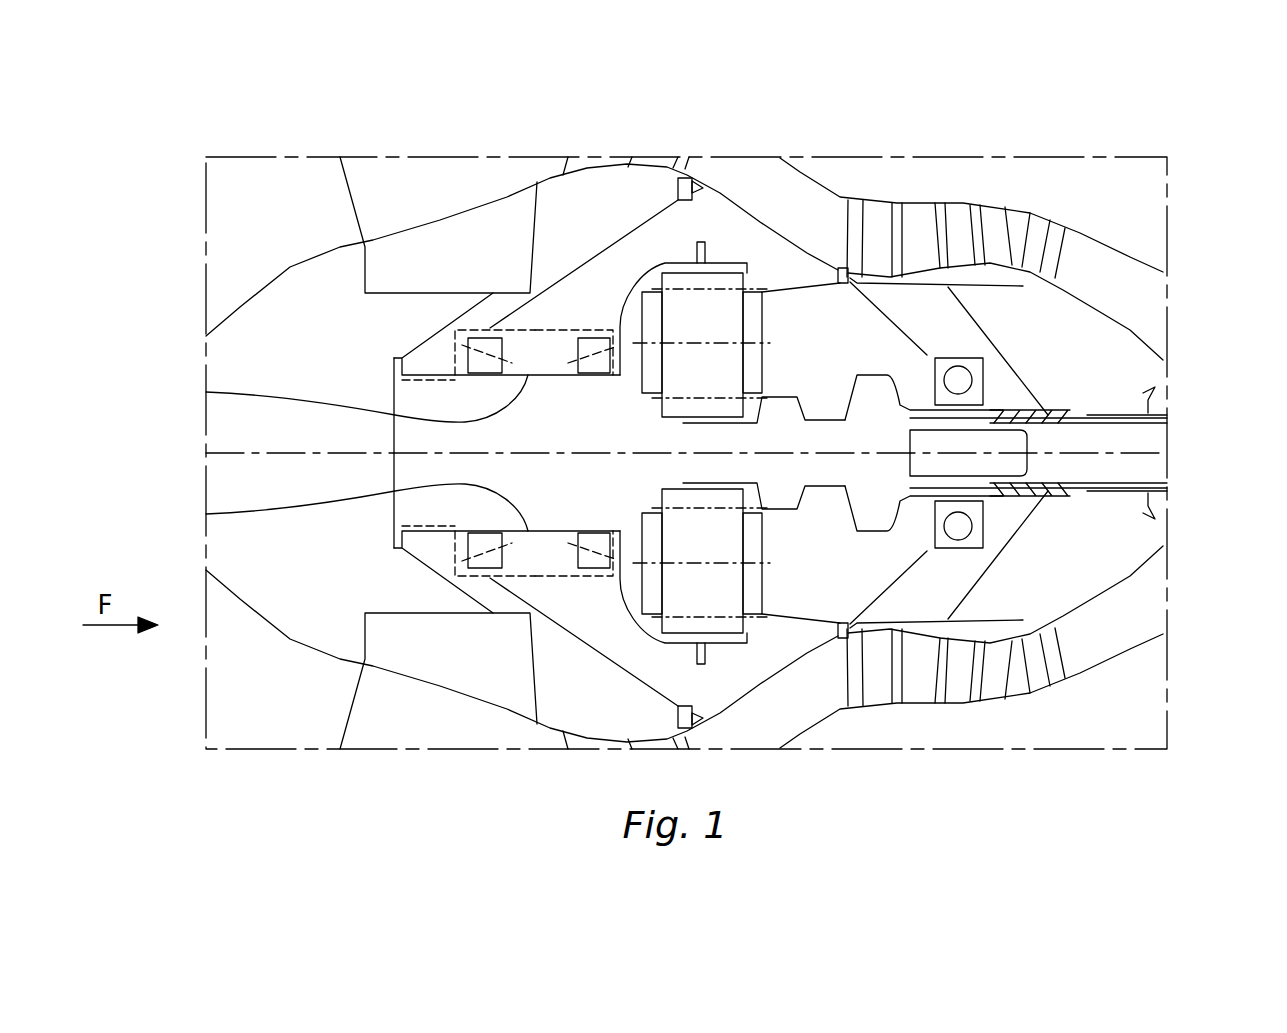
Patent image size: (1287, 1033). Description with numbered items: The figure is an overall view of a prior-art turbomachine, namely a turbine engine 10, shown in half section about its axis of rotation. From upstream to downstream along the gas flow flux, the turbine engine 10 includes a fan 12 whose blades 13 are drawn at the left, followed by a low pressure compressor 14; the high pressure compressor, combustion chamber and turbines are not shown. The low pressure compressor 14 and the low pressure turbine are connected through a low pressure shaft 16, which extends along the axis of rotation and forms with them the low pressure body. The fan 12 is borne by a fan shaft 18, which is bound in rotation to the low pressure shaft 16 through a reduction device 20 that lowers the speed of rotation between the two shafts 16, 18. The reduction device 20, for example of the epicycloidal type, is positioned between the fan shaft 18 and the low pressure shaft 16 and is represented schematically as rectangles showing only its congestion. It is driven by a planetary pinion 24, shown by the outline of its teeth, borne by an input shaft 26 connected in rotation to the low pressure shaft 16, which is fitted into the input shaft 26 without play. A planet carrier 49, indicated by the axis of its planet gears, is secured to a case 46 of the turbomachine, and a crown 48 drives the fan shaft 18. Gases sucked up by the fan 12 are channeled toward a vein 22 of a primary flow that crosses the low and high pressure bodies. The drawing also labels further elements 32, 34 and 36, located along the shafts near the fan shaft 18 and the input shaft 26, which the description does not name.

The turbine engine 10 is at (267, 122).
The fan 12 is at (388, 185).
The blades 13 is at (430, 178).
The low pressure compressor 14 is at (955, 220).
The low pressure shaft 16 is at (1132, 425).
The fan shaft 18 is at (206, 392).
The reduction device 20 is at (718, 307).
The vein of a primary flow 22 is at (797, 195).
The planetary pinion 24 is at (718, 400).
The input shaft 26 is at (900, 403).
The first bearing 32 is at (490, 343).
The second bearing 34 is at (598, 345).
The rear bearing 36 is at (960, 380).
The case 46 is at (805, 287).
The crown 48 is at (678, 262).
The planet carrier 49 is at (707, 345).